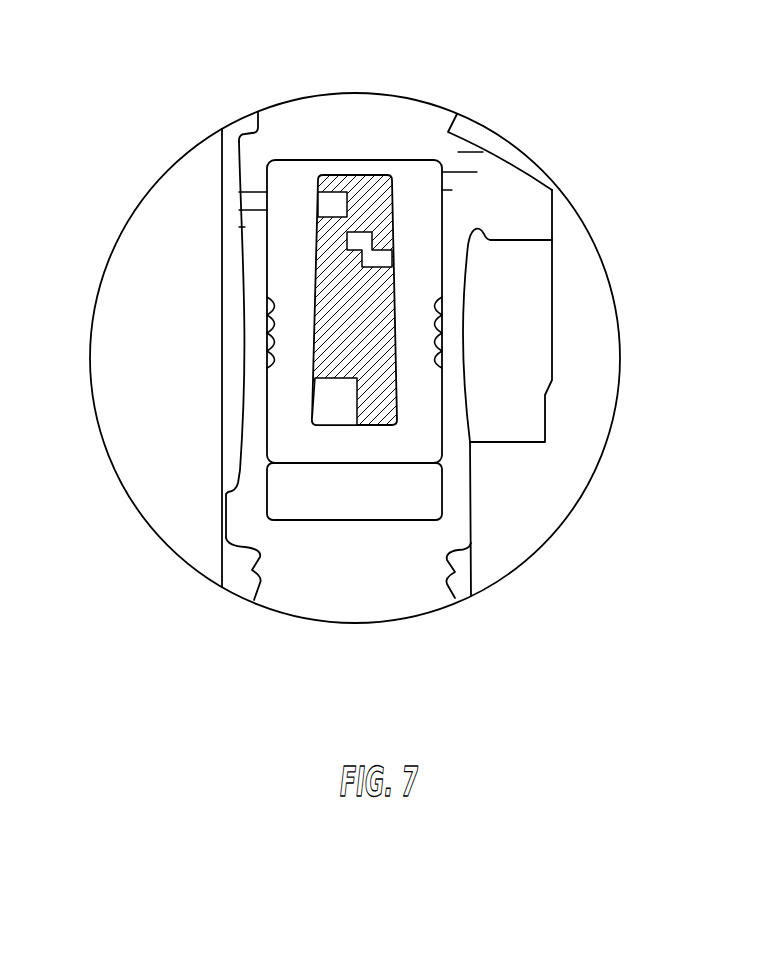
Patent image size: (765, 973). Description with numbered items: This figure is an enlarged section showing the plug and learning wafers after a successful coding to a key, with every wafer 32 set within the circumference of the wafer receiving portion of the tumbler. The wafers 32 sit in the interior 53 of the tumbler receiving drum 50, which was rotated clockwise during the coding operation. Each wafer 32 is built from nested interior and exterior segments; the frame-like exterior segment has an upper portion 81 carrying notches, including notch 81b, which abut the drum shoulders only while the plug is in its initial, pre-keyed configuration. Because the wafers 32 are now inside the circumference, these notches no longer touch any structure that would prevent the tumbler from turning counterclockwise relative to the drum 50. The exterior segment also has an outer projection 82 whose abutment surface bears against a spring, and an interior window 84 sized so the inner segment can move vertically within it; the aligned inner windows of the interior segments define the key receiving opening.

The wafer 32 is at (375, 90).
The tumbler receiving drum 50 is at (528, 560).
The interior of the drum 53 is at (132, 428).
The upper portion of the exterior segment 81 is at (347, 590).
The notch 81b is at (473, 133).
The outer projection 82 is at (517, 192).
The window 84 is at (367, 499).